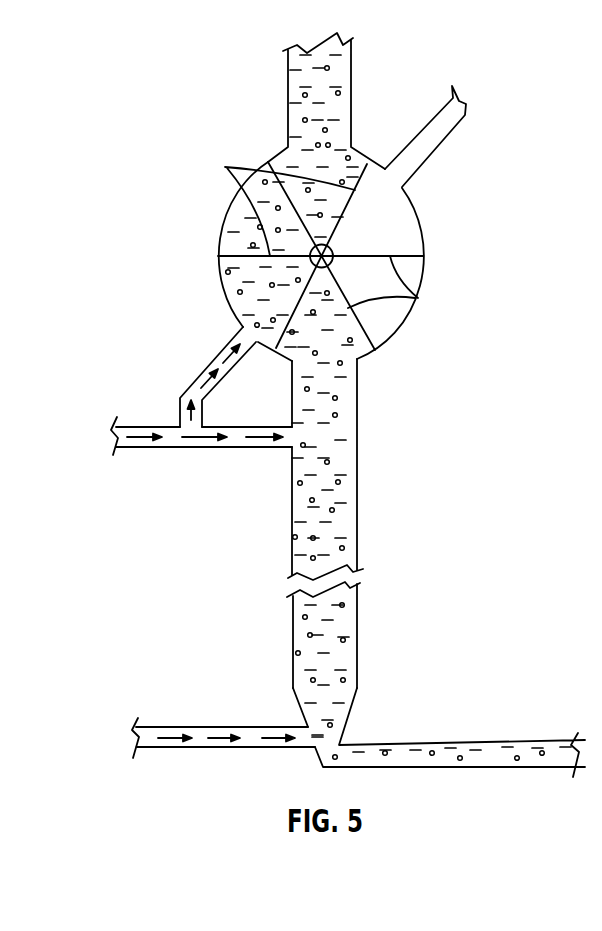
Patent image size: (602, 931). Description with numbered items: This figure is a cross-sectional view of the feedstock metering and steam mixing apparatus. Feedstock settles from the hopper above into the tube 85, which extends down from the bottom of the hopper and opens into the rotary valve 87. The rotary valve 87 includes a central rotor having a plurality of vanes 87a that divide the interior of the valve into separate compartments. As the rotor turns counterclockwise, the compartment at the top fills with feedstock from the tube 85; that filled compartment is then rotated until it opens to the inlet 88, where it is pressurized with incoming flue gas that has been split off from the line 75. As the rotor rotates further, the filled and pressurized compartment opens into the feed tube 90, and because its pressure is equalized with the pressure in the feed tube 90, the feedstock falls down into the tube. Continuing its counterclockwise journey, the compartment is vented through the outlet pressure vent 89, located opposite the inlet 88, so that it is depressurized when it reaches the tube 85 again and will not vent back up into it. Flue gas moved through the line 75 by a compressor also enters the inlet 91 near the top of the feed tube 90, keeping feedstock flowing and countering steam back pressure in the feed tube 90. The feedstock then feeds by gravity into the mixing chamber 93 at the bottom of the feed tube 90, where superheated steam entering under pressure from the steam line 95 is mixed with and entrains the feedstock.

The tube 85 is at (353, 95).
The outlet pressure vent 89 is at (440, 142).
The rotary valve 87 is at (422, 222).
The vanes 87a is at (443, 318).
The inlet 88 is at (210, 358).
The line 75 is at (160, 425).
The inlet 91 is at (302, 436).
The feed tube 90 is at (358, 468).
The mixing chamber 93 is at (352, 710).
The steam line 95 is at (252, 724).